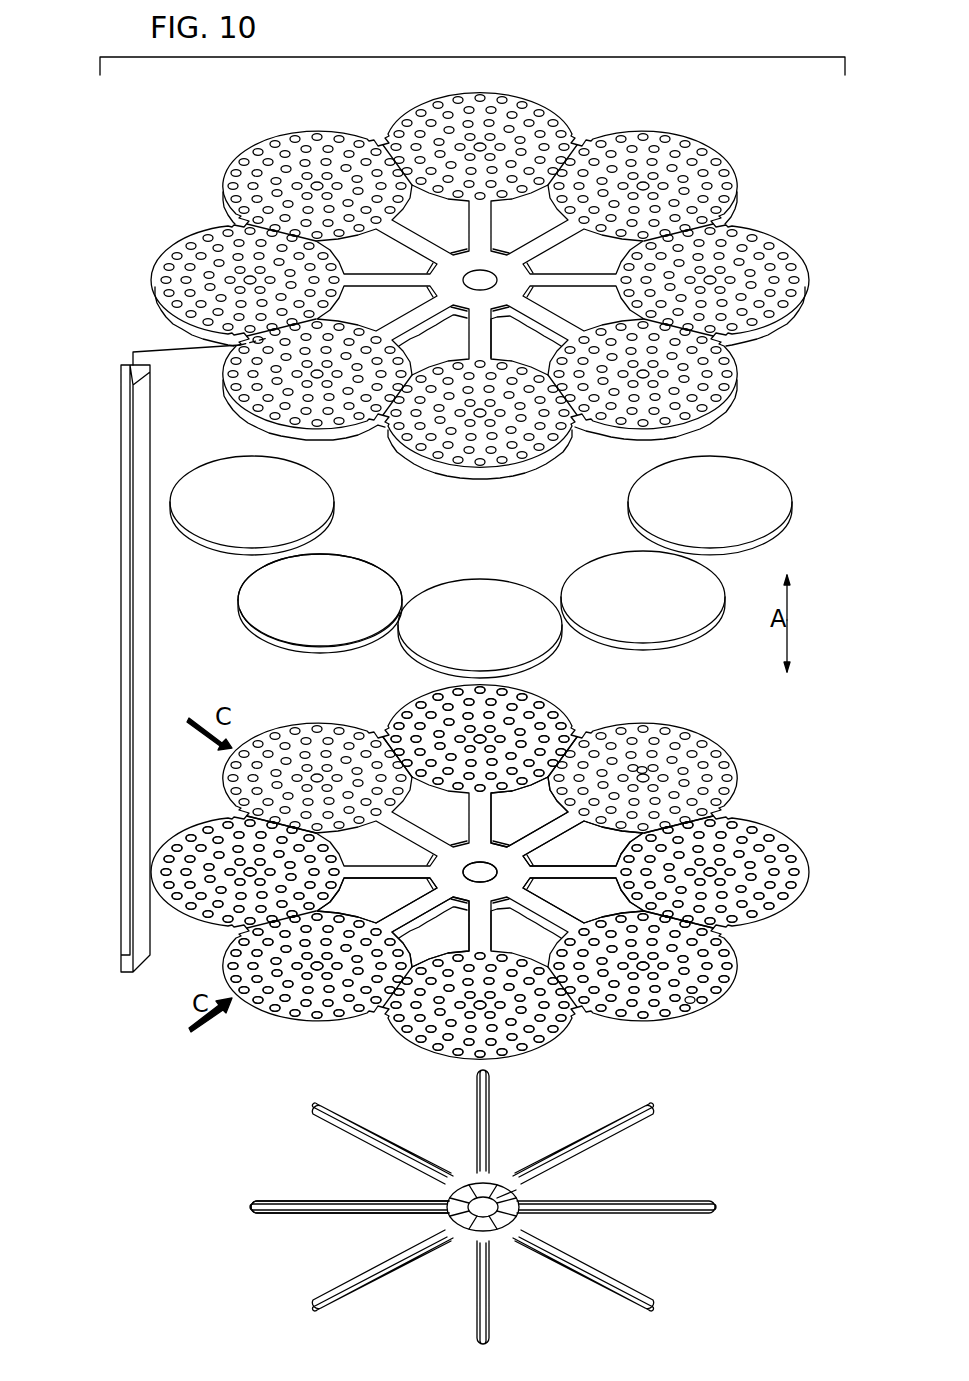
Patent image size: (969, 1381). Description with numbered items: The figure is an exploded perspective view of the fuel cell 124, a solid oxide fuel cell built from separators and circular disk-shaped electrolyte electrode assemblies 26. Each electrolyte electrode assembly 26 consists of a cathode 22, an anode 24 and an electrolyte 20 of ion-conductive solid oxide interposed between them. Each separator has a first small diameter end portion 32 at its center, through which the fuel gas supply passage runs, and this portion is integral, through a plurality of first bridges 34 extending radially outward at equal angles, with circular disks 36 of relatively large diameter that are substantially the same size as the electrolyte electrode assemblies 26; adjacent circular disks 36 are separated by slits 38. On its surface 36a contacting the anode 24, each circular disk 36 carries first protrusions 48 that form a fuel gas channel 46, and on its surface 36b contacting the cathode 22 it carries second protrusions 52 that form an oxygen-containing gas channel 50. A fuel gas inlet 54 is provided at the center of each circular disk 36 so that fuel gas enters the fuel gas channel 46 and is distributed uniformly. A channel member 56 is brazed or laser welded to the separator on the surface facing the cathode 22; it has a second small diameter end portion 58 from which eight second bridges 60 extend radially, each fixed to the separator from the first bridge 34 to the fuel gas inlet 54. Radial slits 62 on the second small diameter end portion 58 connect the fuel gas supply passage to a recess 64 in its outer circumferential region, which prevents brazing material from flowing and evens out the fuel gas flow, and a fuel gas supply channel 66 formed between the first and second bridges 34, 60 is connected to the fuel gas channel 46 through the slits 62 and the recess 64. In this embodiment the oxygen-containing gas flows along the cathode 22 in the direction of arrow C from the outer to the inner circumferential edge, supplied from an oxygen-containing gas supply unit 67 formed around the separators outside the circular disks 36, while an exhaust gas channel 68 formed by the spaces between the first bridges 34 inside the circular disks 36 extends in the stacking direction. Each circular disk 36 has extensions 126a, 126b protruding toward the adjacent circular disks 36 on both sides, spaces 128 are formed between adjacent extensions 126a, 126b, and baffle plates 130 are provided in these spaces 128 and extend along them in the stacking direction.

The electrolyte 20 is at (248, 615).
The cathode 22 is at (272, 595).
The anode 24 is at (272, 618).
The electrolyte electrode assembly 26 is at (368, 553).
The first small diameter end portion 32 is at (548, 860).
The first bridge 34 is at (493, 812).
The circular disk 36 is at (540, 698).
The surface 36a is at (737, 965).
The surface 36b is at (628, 1022).
The slit 38 is at (215, 832).
The fuel gas channel 46 is at (745, 877).
The first protrusion 48 is at (728, 814).
The oxygen-containing gas channel 50 is at (690, 1005).
The second protrusion 52 is at (803, 853).
The fuel gas inlet 54 is at (643, 766).
The channel member 56 is at (650, 1093).
The second small diameter end portion 58 is at (503, 1170).
The second bridge 60 is at (633, 1203).
The slit 62 is at (530, 1198).
The recess 64 is at (467, 1232).
The fuel gas supply channel 66 is at (327, 1208).
The oxygen-containing gas supply unit 67 is at (243, 1010).
The exhaust gas channel 68 is at (425, 935).
The fuel cell 124 is at (652, 99).
The extension 126a is at (395, 725).
The extension 126b is at (225, 808).
The space 128 is at (392, 725).
The baffle plate 130 is at (140, 397).